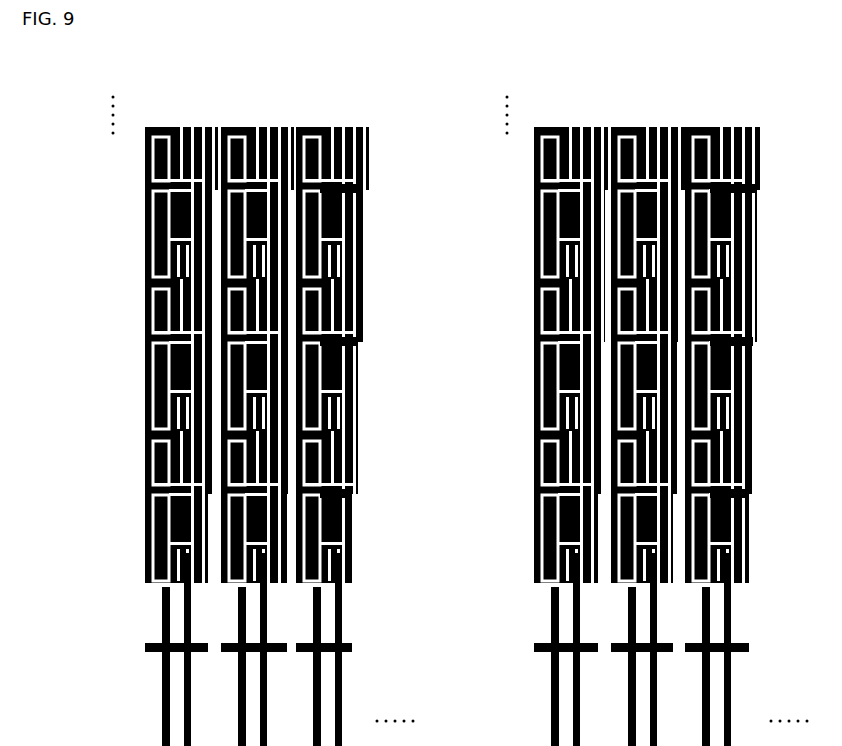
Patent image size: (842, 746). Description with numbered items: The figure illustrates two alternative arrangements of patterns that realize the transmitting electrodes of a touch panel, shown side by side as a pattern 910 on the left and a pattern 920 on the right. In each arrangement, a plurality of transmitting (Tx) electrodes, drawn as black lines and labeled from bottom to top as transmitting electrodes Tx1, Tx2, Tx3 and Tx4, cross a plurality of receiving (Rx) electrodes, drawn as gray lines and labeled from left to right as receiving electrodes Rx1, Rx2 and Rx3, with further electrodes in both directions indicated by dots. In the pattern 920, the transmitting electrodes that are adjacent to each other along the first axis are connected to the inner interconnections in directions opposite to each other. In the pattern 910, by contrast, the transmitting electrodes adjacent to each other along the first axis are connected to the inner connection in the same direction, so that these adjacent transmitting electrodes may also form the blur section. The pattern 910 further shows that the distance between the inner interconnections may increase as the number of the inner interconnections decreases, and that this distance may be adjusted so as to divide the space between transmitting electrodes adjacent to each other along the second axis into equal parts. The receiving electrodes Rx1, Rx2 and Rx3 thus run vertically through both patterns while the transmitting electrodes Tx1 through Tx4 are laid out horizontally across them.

The pattern 910 is at (212, 63).
The pattern 920 is at (607, 63).
The transmitting electrode Tx1 is at (419, 645).
The transmitting electrode Tx2 is at (419, 493).
The transmitting electrode Tx3 is at (421, 341).
The transmitting electrode Tx4 is at (423, 188).
The receiving electrode Rx1 is at (181, 436).
The receiving electrode Rx2 is at (257, 436).
The receiving electrode Rx3 is at (332, 436).